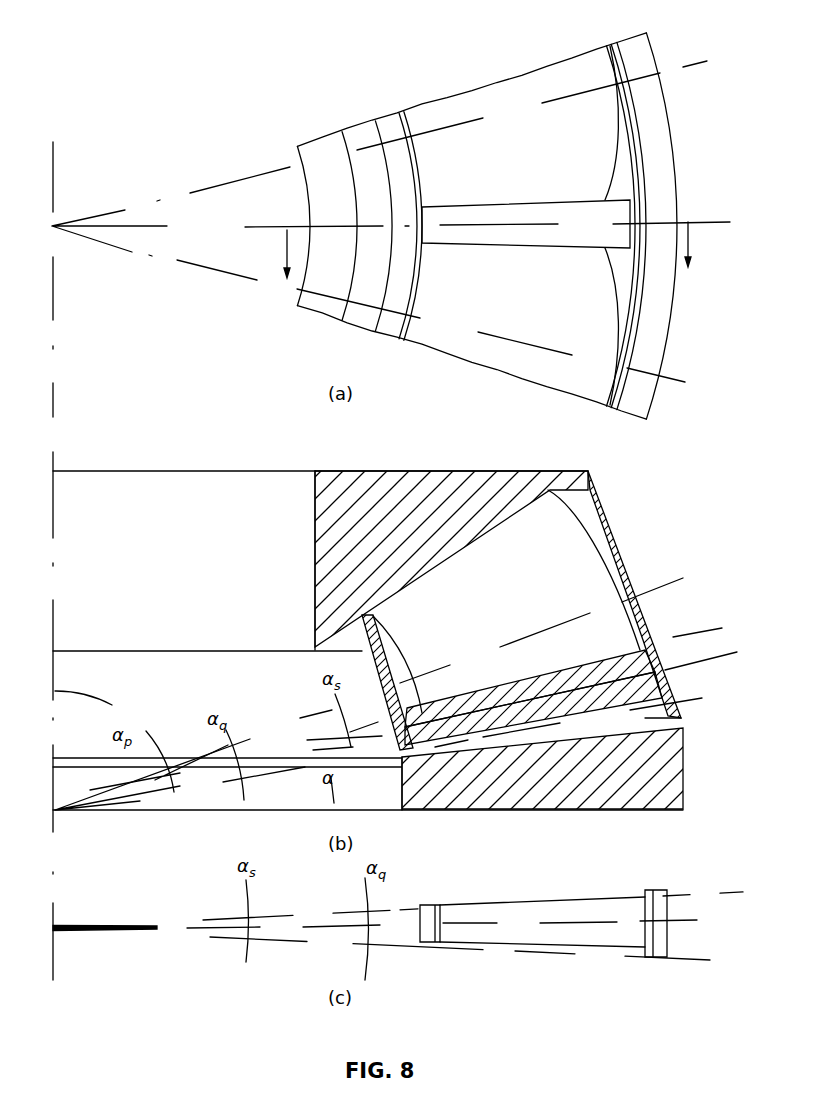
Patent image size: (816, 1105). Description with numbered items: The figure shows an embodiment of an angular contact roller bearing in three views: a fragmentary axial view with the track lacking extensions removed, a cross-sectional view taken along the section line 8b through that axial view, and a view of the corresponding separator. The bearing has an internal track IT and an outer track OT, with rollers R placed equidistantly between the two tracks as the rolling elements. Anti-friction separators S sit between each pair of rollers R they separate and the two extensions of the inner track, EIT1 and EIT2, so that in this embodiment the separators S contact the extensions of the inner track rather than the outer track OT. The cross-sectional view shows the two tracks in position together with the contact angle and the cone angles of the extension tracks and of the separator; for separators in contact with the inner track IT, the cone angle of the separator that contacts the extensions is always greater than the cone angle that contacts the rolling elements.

The internal track IT is at (207, 391).
The outer track OT is at (227, 783).
The rollers R is at (542, 496).
The separators S is at (533, 472).
The extension of inner track 1 EIT1 is at (665, 213).
The extension of inner track 2 EIT2 is at (393, 128).
The section line 8(b)-8(b) 8b is at (488, 250).